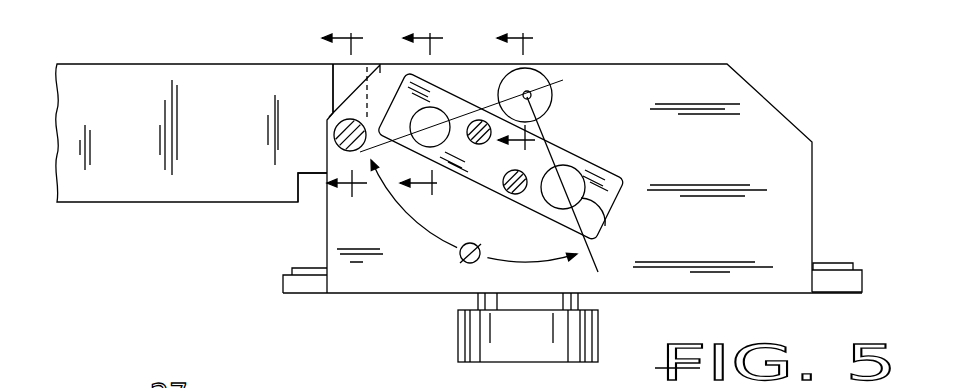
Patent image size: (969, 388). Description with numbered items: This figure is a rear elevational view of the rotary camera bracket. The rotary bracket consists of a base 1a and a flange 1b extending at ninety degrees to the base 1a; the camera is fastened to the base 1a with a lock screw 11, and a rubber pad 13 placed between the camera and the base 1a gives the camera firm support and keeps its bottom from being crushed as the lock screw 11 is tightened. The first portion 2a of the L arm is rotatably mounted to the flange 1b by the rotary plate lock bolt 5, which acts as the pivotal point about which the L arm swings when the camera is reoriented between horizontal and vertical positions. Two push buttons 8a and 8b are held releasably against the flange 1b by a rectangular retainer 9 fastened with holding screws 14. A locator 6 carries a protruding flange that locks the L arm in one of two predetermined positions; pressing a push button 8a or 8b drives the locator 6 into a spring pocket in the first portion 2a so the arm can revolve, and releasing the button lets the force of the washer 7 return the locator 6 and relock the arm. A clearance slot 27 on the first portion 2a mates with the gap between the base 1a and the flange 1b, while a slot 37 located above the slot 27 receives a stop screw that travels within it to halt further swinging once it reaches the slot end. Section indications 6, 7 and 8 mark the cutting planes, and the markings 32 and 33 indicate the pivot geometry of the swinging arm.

The base 1a is at (863, 282).
The flange 1b is at (773, 100).
The first portion of L arm 2a is at (135, 202).
The rotary plate lock bolt 5 is at (553, 102).
The locator 6 is at (343, 115).
The washer 7 is at (421, 110).
The section line VIII 8 is at (510, 88).
The push button 8a is at (433, 103).
The push button 8b is at (606, 230).
The rectangular retainer 9 is at (575, 150).
The lock screw 11 is at (458, 335).
The rubber pad 13 is at (838, 263).
The holding screws 14 is at (505, 190).
The clearance slot 27 is at (305, 198).
The swivel angle indicator 32 is at (458, 263).
The pivot axis 33 is at (530, 91).
The slot 37 is at (333, 83).